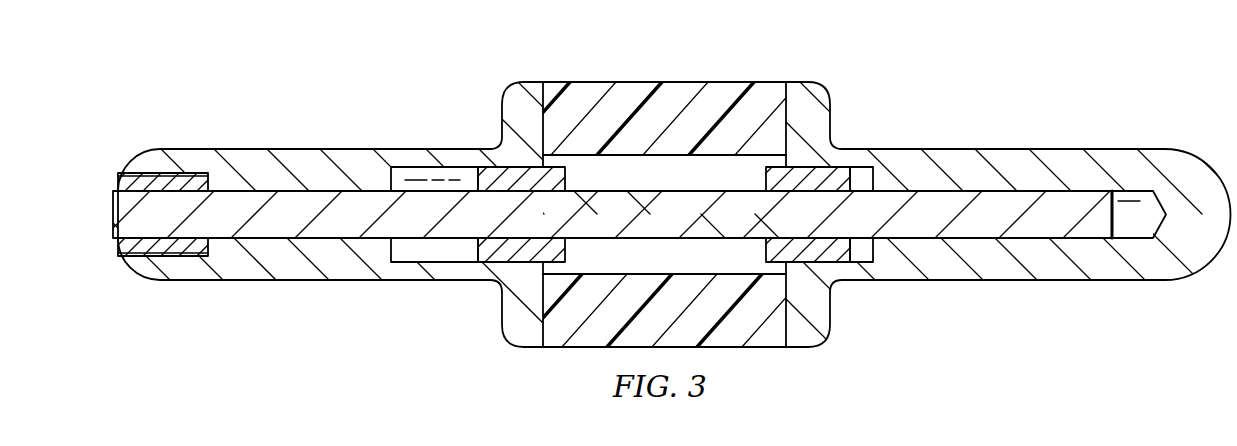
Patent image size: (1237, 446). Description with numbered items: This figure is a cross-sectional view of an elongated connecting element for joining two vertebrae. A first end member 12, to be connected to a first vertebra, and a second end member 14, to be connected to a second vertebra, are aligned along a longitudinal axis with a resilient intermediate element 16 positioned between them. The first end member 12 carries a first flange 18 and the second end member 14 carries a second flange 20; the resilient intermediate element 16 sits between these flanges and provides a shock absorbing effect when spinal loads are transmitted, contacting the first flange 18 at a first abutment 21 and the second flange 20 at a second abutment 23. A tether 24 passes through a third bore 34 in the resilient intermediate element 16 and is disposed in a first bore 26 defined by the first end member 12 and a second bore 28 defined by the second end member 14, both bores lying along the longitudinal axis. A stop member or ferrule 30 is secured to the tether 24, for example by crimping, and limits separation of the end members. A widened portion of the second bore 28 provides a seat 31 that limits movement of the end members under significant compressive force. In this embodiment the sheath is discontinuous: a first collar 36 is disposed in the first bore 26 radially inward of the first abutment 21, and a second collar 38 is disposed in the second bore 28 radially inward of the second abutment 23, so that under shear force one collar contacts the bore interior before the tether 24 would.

The first end member 12 is at (1004, 162).
The second end member 14 is at (300, 162).
The resilient intermediate element 16 is at (637, 82).
The first flange 18 is at (833, 302).
The second flange 20 is at (500, 318).
The first abutment 21 is at (786, 82).
The second abutment 23 is at (543, 82).
The tether 24 is at (267, 227).
The first bore 26 is at (1132, 218).
The second bore 28 is at (427, 248).
The stop member or ferrule 30 is at (137, 248).
The seat 31 is at (411, 170).
The third bore 34 is at (667, 170).
The first collar 36 is at (857, 178).
The second collar 38 is at (466, 175).